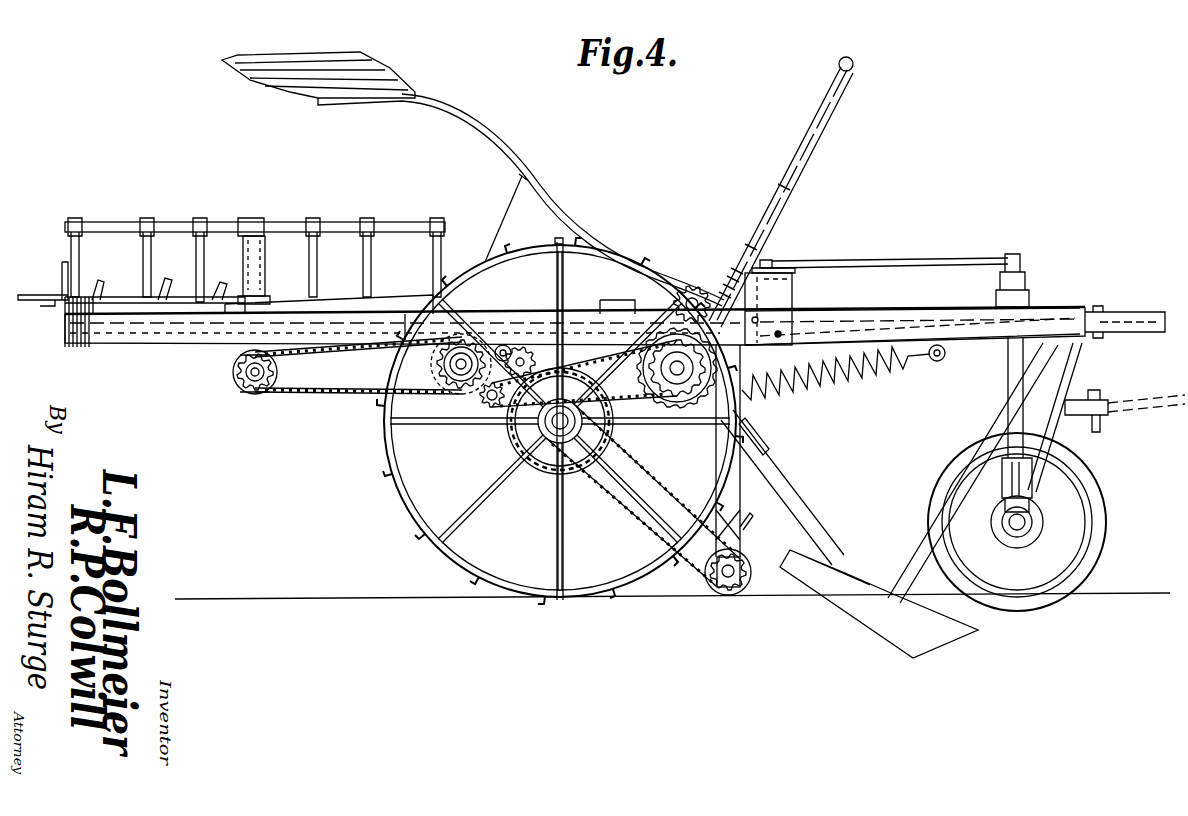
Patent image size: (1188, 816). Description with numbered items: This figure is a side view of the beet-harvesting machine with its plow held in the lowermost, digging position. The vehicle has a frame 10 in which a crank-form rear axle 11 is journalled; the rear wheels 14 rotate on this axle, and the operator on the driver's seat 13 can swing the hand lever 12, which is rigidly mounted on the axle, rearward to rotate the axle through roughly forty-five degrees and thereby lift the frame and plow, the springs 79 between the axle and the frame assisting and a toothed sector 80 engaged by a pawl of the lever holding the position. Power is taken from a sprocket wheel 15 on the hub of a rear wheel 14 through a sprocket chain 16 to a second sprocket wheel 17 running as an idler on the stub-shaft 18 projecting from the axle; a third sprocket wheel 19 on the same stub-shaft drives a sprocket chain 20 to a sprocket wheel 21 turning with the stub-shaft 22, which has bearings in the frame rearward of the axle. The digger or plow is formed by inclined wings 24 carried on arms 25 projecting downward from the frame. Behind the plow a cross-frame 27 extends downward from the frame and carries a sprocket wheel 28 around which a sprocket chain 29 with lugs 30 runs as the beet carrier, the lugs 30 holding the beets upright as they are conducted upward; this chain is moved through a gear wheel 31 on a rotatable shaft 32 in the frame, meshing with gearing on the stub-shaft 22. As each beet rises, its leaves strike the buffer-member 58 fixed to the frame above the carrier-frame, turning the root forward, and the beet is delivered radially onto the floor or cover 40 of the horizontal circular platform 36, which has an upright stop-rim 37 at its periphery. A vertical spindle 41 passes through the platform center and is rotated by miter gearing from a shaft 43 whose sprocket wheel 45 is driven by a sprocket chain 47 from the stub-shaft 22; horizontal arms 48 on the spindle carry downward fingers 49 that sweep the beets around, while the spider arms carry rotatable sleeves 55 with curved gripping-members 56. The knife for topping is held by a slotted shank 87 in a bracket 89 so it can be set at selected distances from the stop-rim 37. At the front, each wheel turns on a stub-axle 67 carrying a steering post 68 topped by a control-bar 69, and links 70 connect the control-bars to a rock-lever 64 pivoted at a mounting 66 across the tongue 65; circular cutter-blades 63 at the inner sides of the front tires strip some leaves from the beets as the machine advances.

The frame 10 is at (915, 320).
The rear axle 11 is at (535, 440).
The hand lever 12 is at (815, 122).
The driver's seat 13 is at (388, 78).
The rear wheels 14 is at (420, 530).
The sprocket wheel 15 is at (570, 470).
The sprocket chain 16 is at (537, 462).
The second sprocket wheel 17 is at (680, 420).
The stub-shaft 18 is at (690, 405).
The third sprocket wheel 19 is at (660, 400).
The sprocket chain 20 is at (492, 400).
The sprocket wheel 21 is at (462, 382).
The stub-shaft 22 is at (445, 385).
The inclined wings 24 is at (870, 612).
The arms 25 is at (920, 543).
The cross-frame 27 is at (732, 507).
The sprocket wheel 28 is at (735, 592).
The sprocket chain 29 is at (700, 575).
The lugs 30 is at (750, 520).
The gear wheel 31 is at (522, 348).
The rotatable shaft 32 is at (503, 344).
The circular platform 36 is at (575, 336).
The stop-rim 37 is at (75, 340).
The floor or cover 40 is at (325, 302).
The vertical spindle 41 is at (262, 258).
The shaft 43 is at (245, 388).
The sprocket wheel 45 is at (272, 372).
The sprocket chain 47 is at (345, 392).
The horizontal arms 48 is at (95, 228).
The fingers 49 is at (200, 240).
The sleeve 55 is at (190, 336).
The gripping-members 56 is at (165, 283).
The buffer-member 58 is at (767, 434).
The circular cutter-blades 63 is at (1103, 512).
The rock-lever 64 is at (782, 270).
The tongue 65 is at (1130, 318).
The pivotal mounting 66 is at (772, 261).
The stub-axle 67 is at (1028, 532).
The steering post 68 is at (1007, 378).
The control-bars 69 is at (1022, 262).
The links 70 is at (895, 262).
The springs 79 is at (865, 362).
The toothed sector 80 is at (700, 292).
The shank 87 is at (55, 296).
The bracket 89 is at (45, 305).